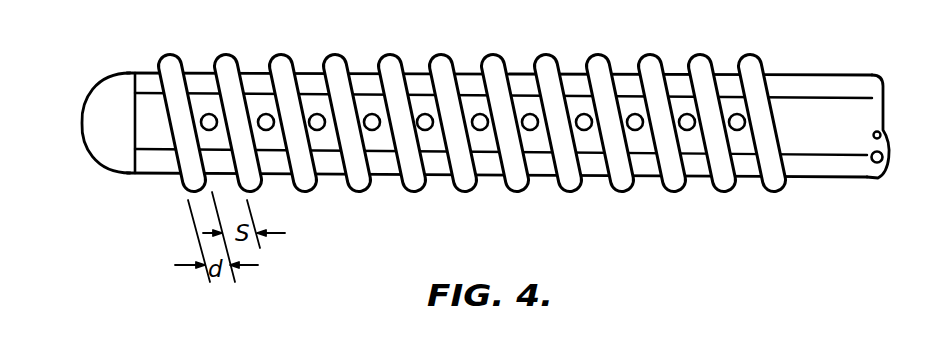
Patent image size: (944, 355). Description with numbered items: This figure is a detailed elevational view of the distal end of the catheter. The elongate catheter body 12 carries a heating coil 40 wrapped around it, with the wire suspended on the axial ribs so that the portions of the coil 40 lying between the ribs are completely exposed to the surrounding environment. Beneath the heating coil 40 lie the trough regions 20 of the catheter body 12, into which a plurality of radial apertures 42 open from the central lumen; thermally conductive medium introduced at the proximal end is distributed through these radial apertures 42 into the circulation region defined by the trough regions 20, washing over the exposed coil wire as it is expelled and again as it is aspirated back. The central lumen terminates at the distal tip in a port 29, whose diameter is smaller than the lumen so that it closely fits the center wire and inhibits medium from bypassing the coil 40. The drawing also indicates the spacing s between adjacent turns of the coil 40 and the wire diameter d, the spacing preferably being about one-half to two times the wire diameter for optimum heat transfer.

The catheter body 12 is at (797, 73).
The trough regions 20 is at (810, 133).
The port 29 is at (82, 123).
The heating coil 40 is at (678, 197).
The radial apertures 42 is at (209, 120).